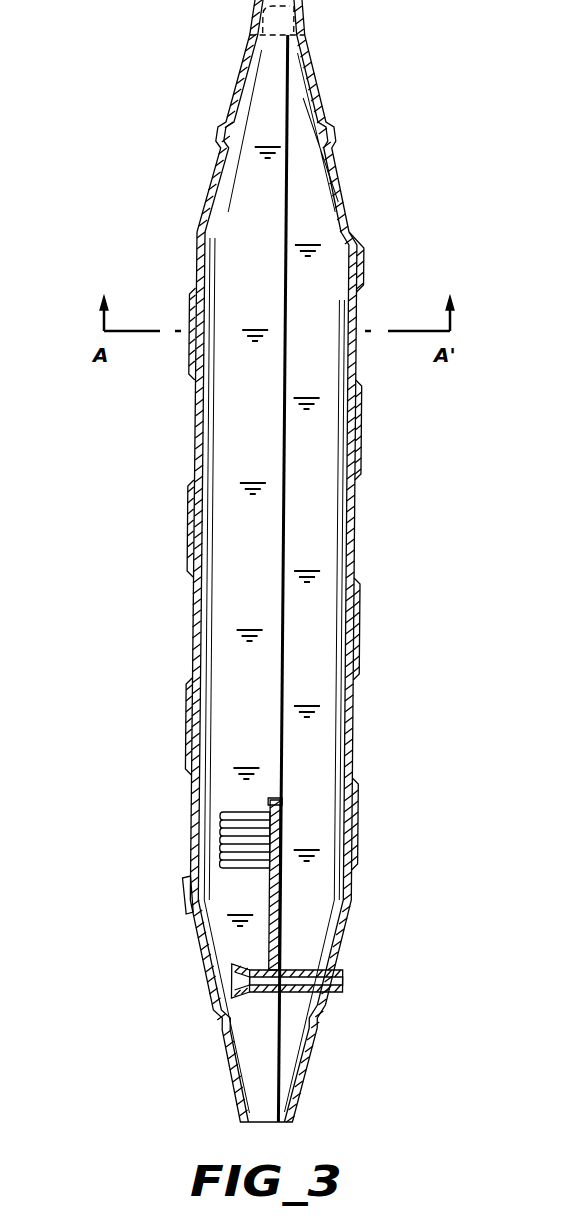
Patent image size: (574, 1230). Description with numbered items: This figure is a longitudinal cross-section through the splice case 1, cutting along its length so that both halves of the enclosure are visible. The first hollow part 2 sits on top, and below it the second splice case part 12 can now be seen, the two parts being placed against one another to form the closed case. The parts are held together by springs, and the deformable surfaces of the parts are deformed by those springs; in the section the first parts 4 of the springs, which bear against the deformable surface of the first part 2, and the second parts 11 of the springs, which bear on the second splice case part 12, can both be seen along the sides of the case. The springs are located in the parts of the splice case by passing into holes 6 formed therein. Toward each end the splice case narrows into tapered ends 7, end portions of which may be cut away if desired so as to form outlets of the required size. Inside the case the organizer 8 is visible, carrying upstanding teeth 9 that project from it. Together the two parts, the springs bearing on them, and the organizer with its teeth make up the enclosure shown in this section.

The splice case 1 is at (170, 618).
The first hollow part 2 is at (196, 233).
The first portions of the springs 4 is at (194, 515).
The holes 6 is at (213, 983).
The tapered ends 7 is at (277, 1024).
The organizer 8 is at (282, 903).
The upstanding teeth 9 is at (247, 850).
The second parts of the springs 11 is at (362, 452).
The second splice case part 12 is at (357, 230).